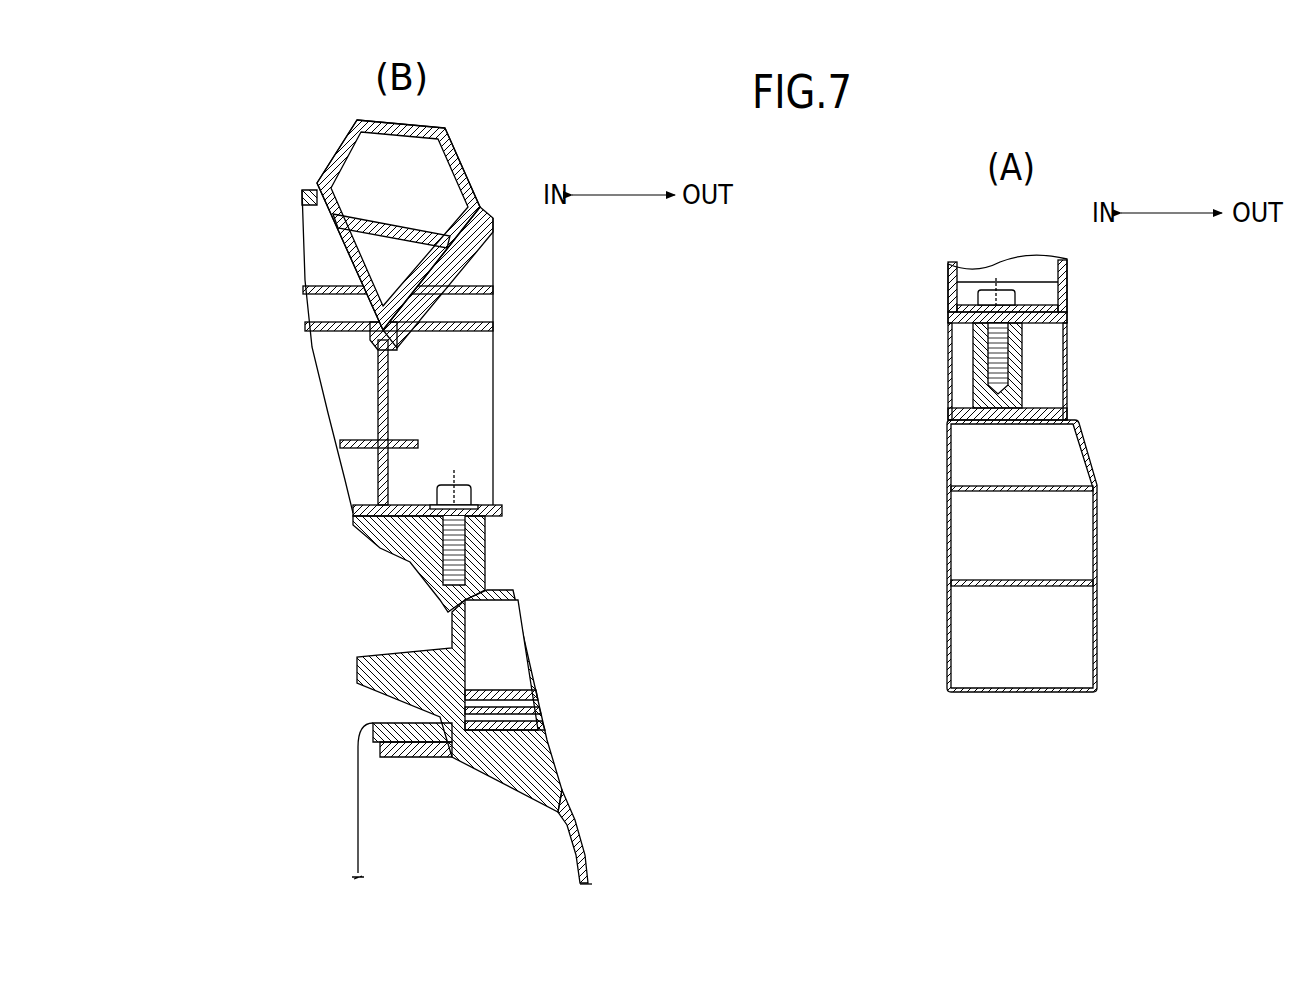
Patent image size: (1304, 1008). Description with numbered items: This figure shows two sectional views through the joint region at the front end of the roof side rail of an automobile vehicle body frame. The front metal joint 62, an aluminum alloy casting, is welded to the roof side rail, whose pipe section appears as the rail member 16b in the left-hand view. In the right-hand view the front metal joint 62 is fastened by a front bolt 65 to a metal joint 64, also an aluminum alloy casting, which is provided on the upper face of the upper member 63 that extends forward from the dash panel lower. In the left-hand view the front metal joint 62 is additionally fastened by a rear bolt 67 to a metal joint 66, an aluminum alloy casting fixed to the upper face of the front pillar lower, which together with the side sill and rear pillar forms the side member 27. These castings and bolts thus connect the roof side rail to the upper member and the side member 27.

The rear member 16b is at (457, 157).
The front metal joint 62 is at (478, 387).
The rear bolt 67 is at (466, 487).
The metal joint 66 is at (503, 590).
The side member 27 is at (592, 830).
The front bolt 65 is at (991, 288).
The metal joint 64 is at (1050, 364).
The upper member 63 is at (1098, 550).